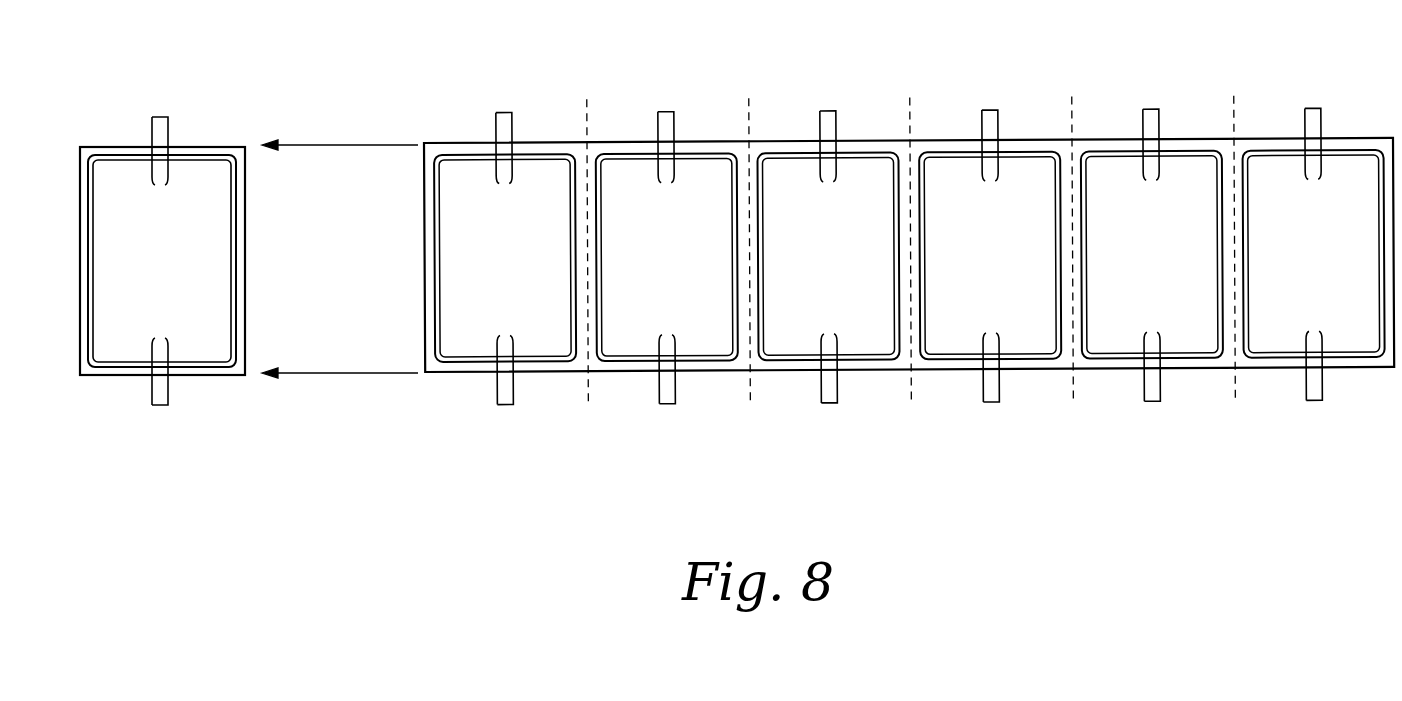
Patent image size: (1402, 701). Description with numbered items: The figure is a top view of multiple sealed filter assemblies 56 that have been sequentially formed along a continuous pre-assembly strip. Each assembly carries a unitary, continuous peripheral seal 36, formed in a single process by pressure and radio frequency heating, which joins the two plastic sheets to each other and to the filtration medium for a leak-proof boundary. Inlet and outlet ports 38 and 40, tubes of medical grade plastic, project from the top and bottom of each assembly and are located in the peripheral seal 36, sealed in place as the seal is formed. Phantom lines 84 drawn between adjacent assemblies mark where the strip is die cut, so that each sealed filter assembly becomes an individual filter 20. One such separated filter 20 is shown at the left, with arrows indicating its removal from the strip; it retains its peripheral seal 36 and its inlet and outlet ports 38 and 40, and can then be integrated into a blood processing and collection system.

The filter 20 is at (193, 180).
The peripheral seal 36 is at (238, 262).
The inlet port 38 is at (157, 124).
The outlet port 40 is at (162, 396).
The sealed filter assemblies 56 is at (800, 175).
The phantom lines 84 is at (745, 120).